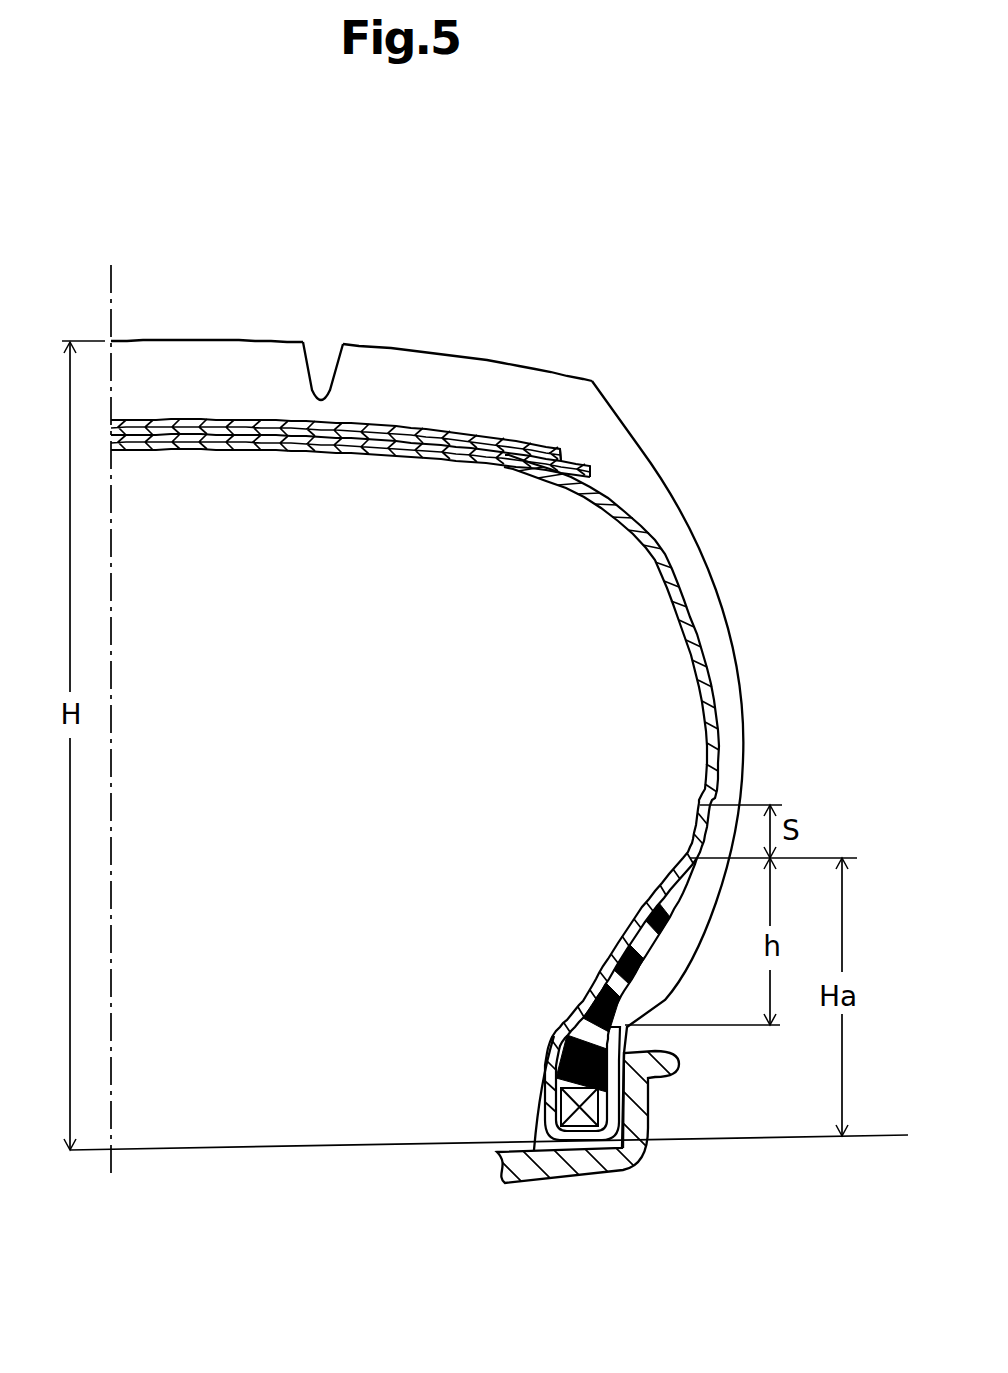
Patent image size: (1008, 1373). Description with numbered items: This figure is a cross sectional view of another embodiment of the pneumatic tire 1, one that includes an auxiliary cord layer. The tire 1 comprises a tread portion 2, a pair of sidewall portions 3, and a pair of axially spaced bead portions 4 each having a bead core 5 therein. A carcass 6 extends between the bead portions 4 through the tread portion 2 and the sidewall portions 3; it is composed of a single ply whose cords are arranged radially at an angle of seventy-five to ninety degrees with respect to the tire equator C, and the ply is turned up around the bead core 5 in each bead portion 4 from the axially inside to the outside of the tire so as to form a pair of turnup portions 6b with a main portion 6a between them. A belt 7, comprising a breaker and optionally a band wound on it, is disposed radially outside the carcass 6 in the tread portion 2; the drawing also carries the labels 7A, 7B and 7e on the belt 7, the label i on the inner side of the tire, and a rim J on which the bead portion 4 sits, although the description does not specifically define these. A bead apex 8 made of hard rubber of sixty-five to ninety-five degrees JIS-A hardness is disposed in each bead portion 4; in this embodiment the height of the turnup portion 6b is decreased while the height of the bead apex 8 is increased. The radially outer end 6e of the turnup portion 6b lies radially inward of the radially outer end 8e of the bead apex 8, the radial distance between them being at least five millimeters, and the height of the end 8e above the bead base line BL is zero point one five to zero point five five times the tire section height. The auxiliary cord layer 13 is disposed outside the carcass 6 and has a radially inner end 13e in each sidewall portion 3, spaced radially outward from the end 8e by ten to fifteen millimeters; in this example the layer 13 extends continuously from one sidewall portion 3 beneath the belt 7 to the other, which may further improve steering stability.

The pneumatic tire 1 is at (473, 678).
The tread portion 2 is at (450, 300).
The sidewall portion 3 is at (762, 677).
The bead portion 4 is at (497, 1093).
The bead core 5 is at (563, 1101).
The carcass 6 is at (620, 971).
The main portion 6a is at (648, 923).
The turnup portion 6b is at (575, 1022).
The radially outer end of the turnup portion 6e is at (627, 1028).
The belt 7 is at (378, 417).
The inner belt ply 7A is at (257, 435).
The outer belt ply 7B is at (355, 435).
The belt edge 7e is at (597, 448).
The bead apex 8 is at (573, 1067).
The radially outer end of the bead apex 8e is at (690, 857).
The auxiliary cord layer 13 is at (633, 515).
The radially inner end of the auxiliary cord layer 13e is at (715, 805).
The inner surface of tire i is at (663, 574).
The rim J is at (542, 1172).
The tire equator C is at (111, 704).
The bead base line BL is at (338, 1145).